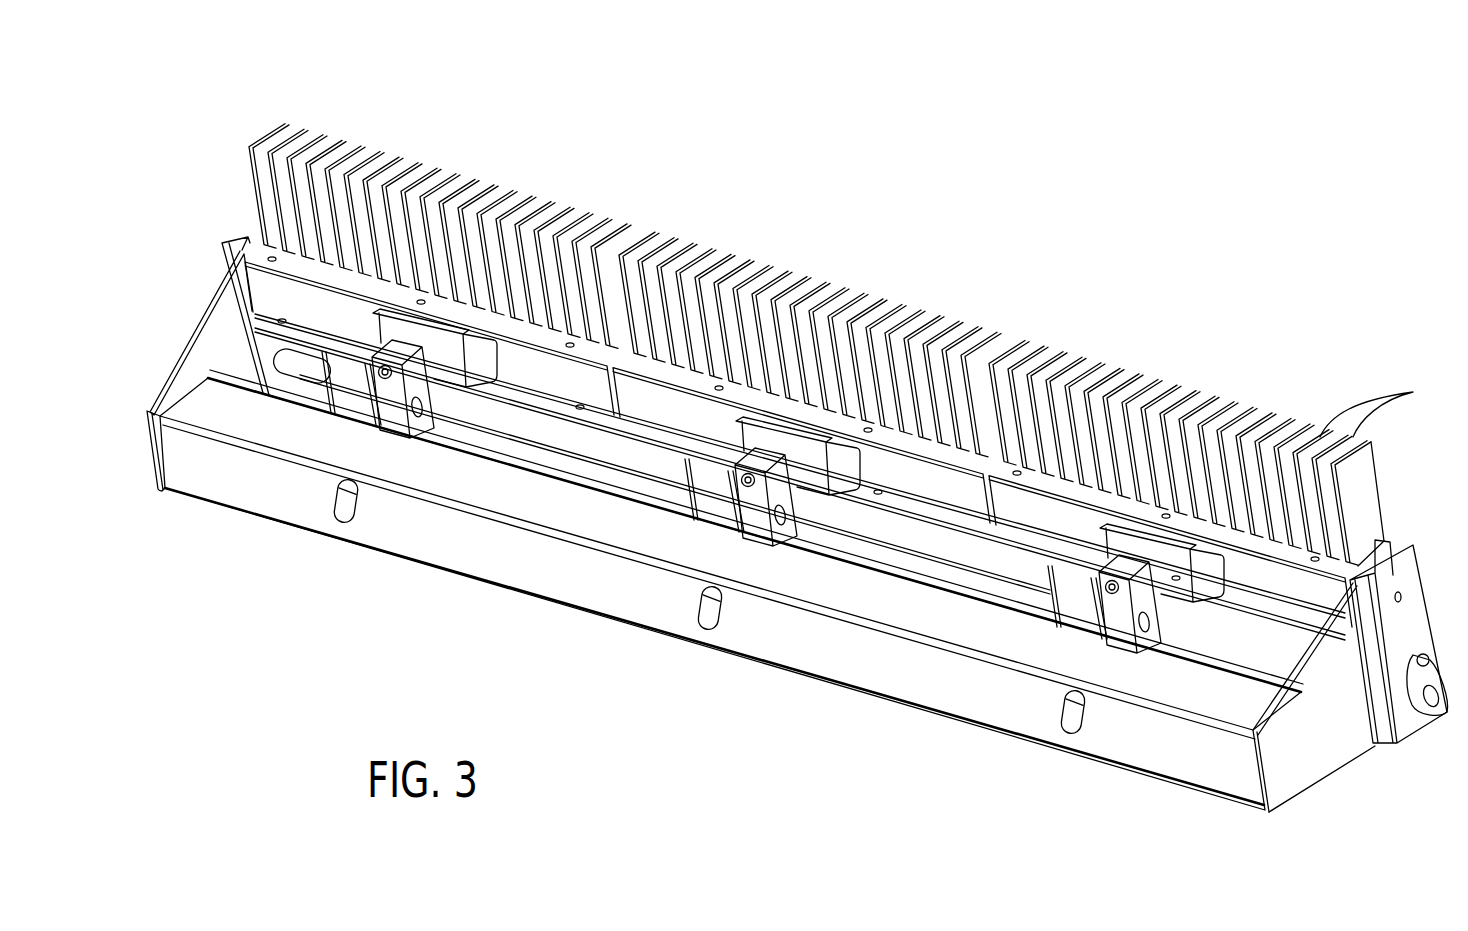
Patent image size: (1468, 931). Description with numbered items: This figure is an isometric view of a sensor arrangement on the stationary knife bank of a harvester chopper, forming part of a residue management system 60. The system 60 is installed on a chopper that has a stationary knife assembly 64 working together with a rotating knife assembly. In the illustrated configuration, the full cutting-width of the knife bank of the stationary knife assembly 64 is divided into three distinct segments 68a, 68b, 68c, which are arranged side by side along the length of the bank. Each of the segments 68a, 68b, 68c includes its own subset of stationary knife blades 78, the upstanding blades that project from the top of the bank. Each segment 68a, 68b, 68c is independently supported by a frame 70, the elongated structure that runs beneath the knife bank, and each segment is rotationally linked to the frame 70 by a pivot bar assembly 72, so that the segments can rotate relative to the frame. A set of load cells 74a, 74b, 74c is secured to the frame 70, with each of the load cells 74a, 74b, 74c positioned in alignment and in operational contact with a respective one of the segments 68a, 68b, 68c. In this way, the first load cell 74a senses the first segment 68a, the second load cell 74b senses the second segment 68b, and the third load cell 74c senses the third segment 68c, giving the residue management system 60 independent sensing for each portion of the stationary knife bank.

The residue management system 60 is at (198, 467).
The stationary knife assembly 64 is at (814, 345).
The segment 68a is at (473, 146).
The segment 68b is at (836, 251).
The segment 68c is at (1199, 361).
The frame 70 is at (176, 372).
The pivot bar assembly 72 is at (262, 367).
The load cell 74a is at (390, 408).
The load cell 74b is at (753, 513).
The load cell 74c is at (1115, 620).
The stationary knife blades 78 is at (1383, 408).